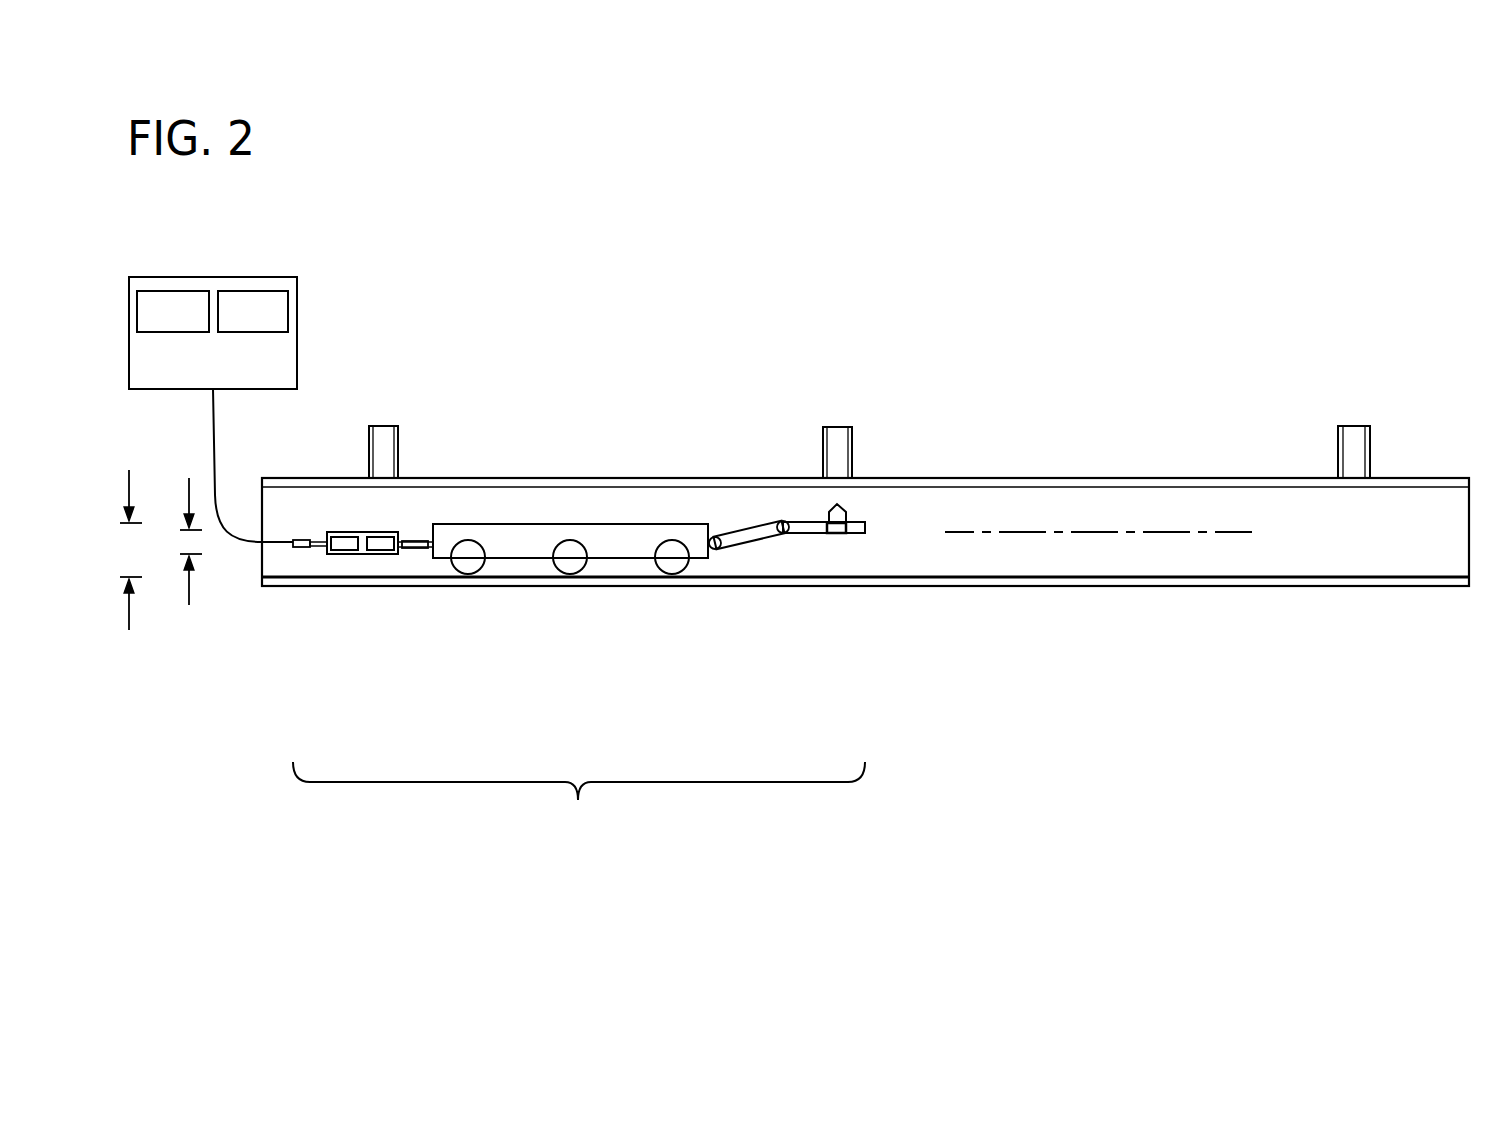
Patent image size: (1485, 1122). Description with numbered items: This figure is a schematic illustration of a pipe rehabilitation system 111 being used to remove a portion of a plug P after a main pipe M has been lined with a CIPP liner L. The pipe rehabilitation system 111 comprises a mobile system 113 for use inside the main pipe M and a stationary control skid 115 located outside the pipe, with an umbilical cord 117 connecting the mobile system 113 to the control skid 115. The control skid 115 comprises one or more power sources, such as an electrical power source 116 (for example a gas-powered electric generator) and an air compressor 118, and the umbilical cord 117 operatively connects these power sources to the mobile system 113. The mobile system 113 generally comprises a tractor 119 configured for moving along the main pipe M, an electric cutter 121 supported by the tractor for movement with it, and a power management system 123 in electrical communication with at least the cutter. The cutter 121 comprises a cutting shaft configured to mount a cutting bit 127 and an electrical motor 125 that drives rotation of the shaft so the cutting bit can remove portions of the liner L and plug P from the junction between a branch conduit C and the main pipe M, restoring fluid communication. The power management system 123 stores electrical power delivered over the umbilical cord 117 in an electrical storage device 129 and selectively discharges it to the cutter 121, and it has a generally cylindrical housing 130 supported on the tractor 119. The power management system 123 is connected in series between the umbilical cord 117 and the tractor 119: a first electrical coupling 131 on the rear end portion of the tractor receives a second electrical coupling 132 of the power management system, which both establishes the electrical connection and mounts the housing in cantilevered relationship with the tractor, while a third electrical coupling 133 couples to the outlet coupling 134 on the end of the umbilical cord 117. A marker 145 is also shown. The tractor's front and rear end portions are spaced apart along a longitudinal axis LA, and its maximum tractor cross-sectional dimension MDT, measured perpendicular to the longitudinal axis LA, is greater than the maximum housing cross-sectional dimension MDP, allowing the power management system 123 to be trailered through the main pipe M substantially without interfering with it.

The pipe rehabilitation system 111 is at (512, 362).
The mobile system 113 is at (579, 802).
The control skid 115 is at (188, 377).
The electrical power source 116 is at (197, 323).
The umbilical cord 117 is at (214, 447).
The air compressor 118 is at (277, 323).
The tractor 119 is at (603, 524).
The electric cutter 121 is at (880, 520).
The power management system 123 is at (325, 530).
The electrical motor 125 is at (857, 533).
The cutting bit 127 is at (830, 506).
The electrical storage device 129 is at (392, 531).
The housing 130 is at (363, 554).
The first electrical coupling 131 is at (425, 550).
The second electrical coupling 132 is at (402, 550).
The third electrical coupling 133 is at (313, 538).
The outlet coupling 134 is at (300, 548).
The post marker 145 is at (337, 531).
The branch conduit C is at (822, 432).
The plug P is at (838, 462).
The liner L is at (1188, 578).
The main pipe M is at (1052, 587).
The longitudinal axis LA is at (1094, 532).
The maximum tractor cross-sectional dimension MDT is at (129, 550).
The maximum housing cross-sectional dimension MDP is at (189, 563).